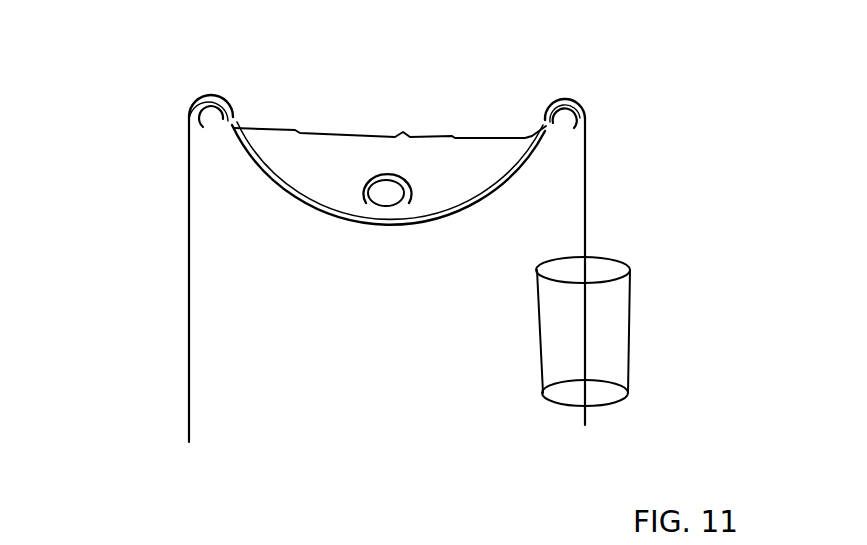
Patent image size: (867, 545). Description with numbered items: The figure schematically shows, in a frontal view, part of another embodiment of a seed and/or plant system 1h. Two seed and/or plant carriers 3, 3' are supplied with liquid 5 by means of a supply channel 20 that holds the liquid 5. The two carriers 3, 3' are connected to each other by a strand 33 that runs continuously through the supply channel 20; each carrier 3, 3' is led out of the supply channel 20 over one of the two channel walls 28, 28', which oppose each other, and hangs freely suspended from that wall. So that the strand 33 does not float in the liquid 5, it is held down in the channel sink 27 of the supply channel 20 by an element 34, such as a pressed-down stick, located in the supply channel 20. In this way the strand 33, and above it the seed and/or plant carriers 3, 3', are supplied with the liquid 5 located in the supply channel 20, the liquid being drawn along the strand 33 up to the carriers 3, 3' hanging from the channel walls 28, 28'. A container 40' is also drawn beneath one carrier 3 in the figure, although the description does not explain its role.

The seed and/or plant system 1h is at (660, 74).
The seed and/or plant carrier 3 is at (640, 271).
The seed and/or plant carrier 3' is at (133, 279).
The liquid 5 is at (323, 155).
The supply channel 20 is at (523, 175).
The channel sink 27 is at (340, 217).
The channel wall 28 is at (601, 64).
The channel wall 28' is at (179, 78).
The strand 33 is at (295, 205).
The element 34 is at (380, 193).
The collecting container 40' is at (629, 331).